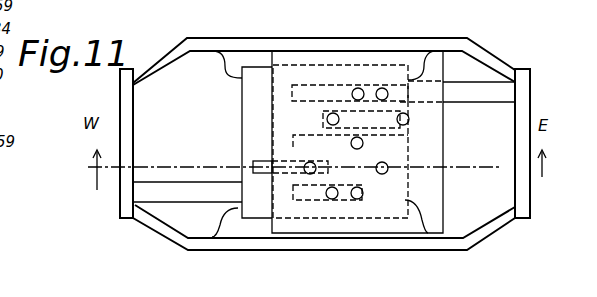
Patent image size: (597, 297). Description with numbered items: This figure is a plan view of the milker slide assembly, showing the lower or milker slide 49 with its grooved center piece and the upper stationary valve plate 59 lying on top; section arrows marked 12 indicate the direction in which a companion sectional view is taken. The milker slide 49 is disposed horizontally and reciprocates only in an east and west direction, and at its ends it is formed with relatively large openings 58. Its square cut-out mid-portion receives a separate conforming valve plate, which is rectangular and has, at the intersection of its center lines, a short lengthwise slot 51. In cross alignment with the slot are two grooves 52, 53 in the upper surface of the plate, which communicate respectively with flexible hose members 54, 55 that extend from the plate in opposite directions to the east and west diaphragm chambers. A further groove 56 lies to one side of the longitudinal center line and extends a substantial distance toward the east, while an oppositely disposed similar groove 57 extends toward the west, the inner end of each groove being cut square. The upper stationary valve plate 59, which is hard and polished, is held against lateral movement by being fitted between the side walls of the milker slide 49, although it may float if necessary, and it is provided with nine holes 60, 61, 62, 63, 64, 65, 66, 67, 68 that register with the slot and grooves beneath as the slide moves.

The section line 12 is at (316, 180).
The milker slide 49 is at (252, 122).
The lengthwise slot 51 is at (293, 147).
The groove 52 is at (292, 99).
The groove 53 is at (309, 200).
The flexible hose member 54 is at (497, 87).
The flexible hose member 55 is at (178, 197).
The groove 56 is at (402, 102).
The groove 57 is at (264, 176).
The opening 58 is at (479, 119).
The upper stationary valve plate 59 is at (443, 222).
The hole 60 is at (359, 88).
The hole 61 is at (384, 88).
The hole 62 is at (330, 114).
The hole 63 is at (409, 119).
The hole 64 is at (363, 143).
The hole 65 is at (312, 174).
The hole 66 is at (388, 169).
The hole 67 is at (334, 199).
The hole 68 is at (360, 199).